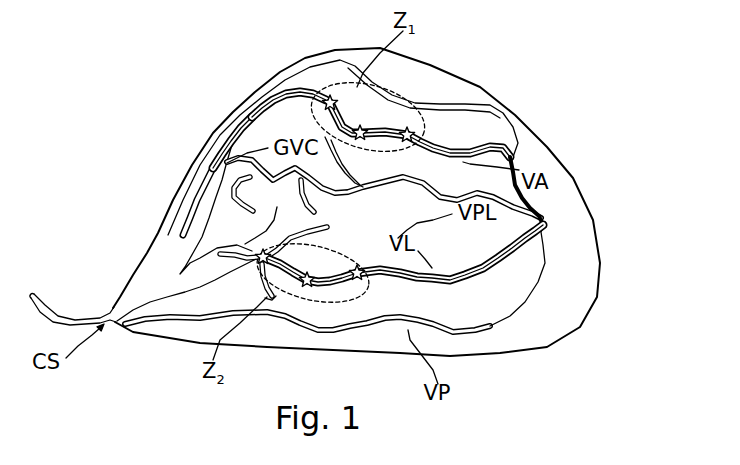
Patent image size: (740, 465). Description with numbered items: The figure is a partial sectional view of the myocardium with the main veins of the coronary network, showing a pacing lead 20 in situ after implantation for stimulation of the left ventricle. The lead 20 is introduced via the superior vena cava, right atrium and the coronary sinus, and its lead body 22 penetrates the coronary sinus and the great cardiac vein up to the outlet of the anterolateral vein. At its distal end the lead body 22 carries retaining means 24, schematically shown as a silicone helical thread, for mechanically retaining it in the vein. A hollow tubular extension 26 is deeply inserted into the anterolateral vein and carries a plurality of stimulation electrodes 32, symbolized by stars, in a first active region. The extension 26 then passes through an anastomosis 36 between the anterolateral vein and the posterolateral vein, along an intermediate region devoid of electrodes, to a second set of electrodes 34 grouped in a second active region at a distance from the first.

The lead 20 is at (192, 165).
The lead body 22 is at (213, 128).
The retaining means 24 is at (297, 90).
The hollow tubular extension 26 is at (440, 143).
The stimulation electrodes 32 is at (330, 97).
The electrodes 34 is at (310, 277).
The anastomosis 36 is at (514, 233).